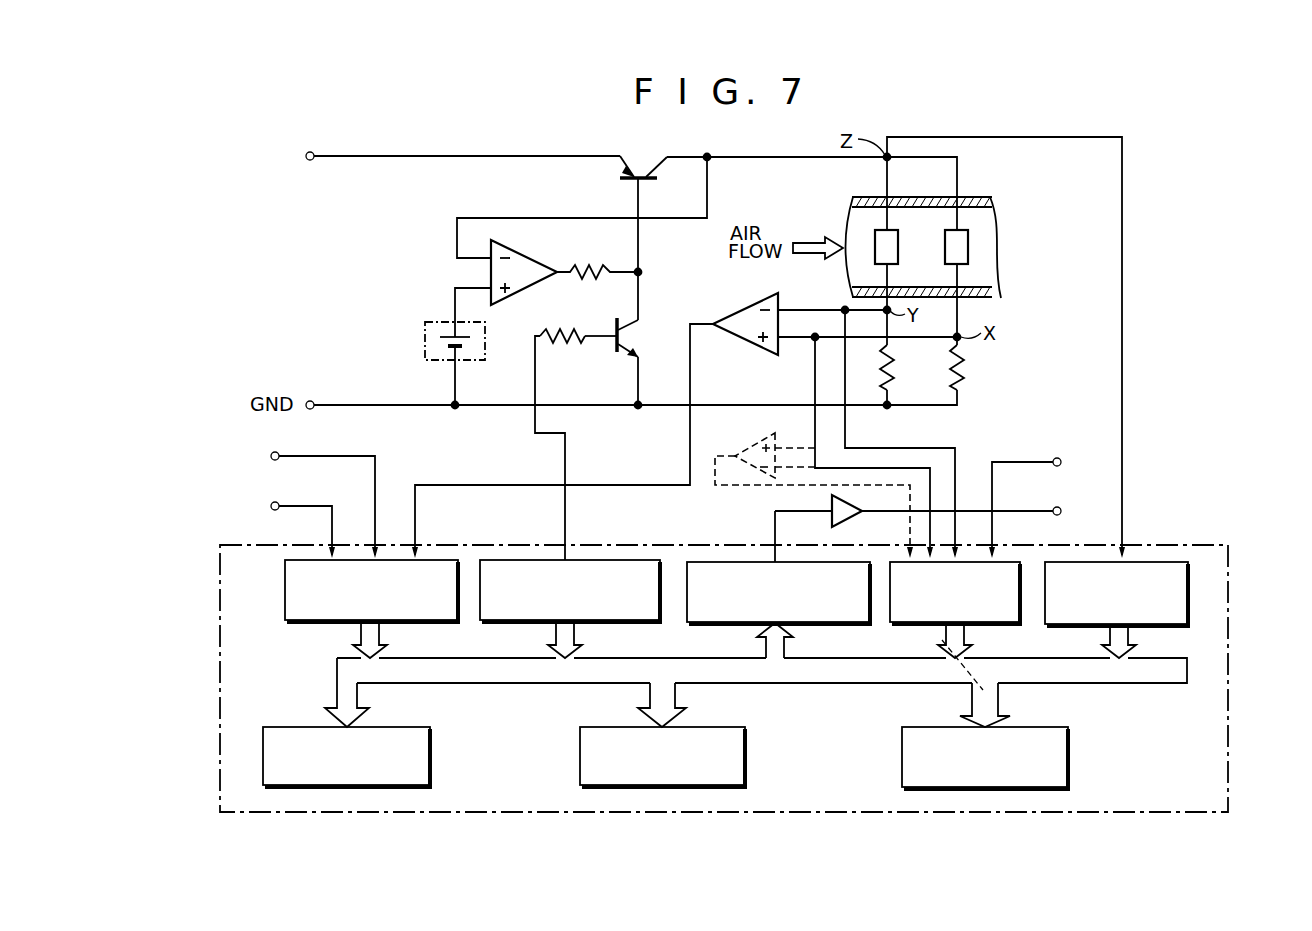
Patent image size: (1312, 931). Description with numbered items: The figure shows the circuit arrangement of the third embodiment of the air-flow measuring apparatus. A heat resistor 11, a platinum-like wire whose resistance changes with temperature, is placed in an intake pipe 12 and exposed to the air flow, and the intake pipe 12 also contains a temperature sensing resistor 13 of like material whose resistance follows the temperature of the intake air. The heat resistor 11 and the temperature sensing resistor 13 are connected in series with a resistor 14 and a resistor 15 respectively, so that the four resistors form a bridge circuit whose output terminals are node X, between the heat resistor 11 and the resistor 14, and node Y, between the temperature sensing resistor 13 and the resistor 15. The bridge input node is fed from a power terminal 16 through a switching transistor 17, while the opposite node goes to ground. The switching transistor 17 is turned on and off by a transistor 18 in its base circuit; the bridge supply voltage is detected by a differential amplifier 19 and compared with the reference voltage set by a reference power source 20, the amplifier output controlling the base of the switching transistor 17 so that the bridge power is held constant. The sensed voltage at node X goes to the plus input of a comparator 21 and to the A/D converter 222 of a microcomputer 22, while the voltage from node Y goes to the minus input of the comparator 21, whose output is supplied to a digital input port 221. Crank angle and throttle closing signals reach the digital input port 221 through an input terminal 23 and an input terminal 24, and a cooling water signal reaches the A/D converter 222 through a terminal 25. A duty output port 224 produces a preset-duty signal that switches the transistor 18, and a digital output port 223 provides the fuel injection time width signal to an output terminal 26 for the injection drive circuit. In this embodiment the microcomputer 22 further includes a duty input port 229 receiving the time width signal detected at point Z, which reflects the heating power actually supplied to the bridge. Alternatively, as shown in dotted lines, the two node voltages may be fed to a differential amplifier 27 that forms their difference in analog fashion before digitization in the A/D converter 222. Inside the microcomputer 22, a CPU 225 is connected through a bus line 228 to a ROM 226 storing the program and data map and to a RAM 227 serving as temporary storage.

The heat resistor 11 is at (970, 246).
The intake pipe 12 is at (989, 197).
The temperature sensing resistor 13 is at (873, 235).
The resistor 14 is at (965, 375).
The resistor 15 is at (895, 378).
The power terminal 16 is at (310, 151).
The switching transistor 17 is at (645, 163).
The transistor 18 is at (641, 331).
The differential amplifier 19 is at (537, 258).
The reference power source 20 is at (425, 336).
The comparator 21 is at (746, 343).
The microcomputer 22 is at (1232, 693).
The input terminal 23 is at (281, 452).
The input terminal 24 is at (281, 503).
The terminal 25 is at (1053, 460).
The output terminal 26 is at (1061, 515).
The differential amplifier 27 is at (756, 447).
The digital input port 221 is at (285, 603).
The A/D converter 222 is at (983, 626).
The digital output port 223 is at (820, 626).
The duty output port 224 is at (620, 624).
The CPU 225 is at (1070, 776).
The ROM 226 is at (748, 773).
The RAM 227 is at (433, 771).
The bus line 228 is at (822, 688).
The duty input port 229 is at (1150, 628).